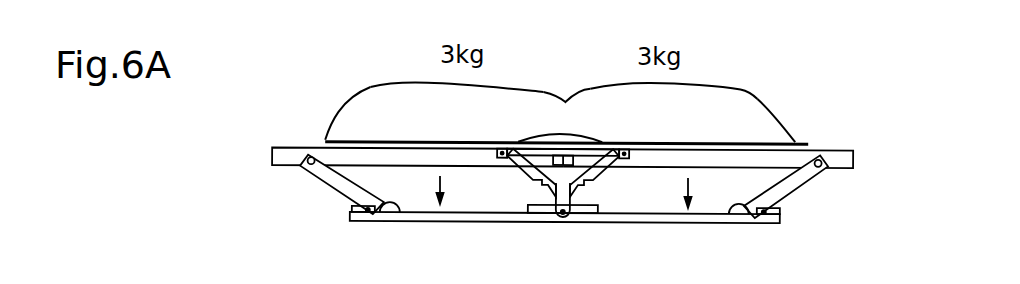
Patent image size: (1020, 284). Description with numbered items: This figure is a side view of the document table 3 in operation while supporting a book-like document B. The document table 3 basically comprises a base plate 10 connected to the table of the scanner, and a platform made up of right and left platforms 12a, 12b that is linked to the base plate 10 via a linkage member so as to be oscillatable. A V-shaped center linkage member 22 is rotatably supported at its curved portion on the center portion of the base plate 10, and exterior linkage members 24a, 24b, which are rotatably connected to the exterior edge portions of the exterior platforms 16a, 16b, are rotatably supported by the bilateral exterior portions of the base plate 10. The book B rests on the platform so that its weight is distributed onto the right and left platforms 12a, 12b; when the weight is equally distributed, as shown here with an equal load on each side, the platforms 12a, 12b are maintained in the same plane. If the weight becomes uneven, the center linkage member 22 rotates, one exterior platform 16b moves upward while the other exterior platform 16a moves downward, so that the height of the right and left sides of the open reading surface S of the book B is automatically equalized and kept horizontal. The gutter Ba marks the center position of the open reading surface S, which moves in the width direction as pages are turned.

The document table 3 is at (292, 66).
The book-like document B is at (750, 120).
The open reading surface S is at (383, 86).
The gutter Ba is at (564, 91).
The exterior platform 16a is at (286, 166).
The exterior platform 16b is at (840, 170).
The exterior linkage member 24a is at (336, 180).
The exterior linkage member 24b is at (797, 189).
The base plate 10 is at (518, 222).
The center linkage member 22 is at (572, 203).
The platform 12a is at (487, 157).
The platform 12b is at (673, 157).